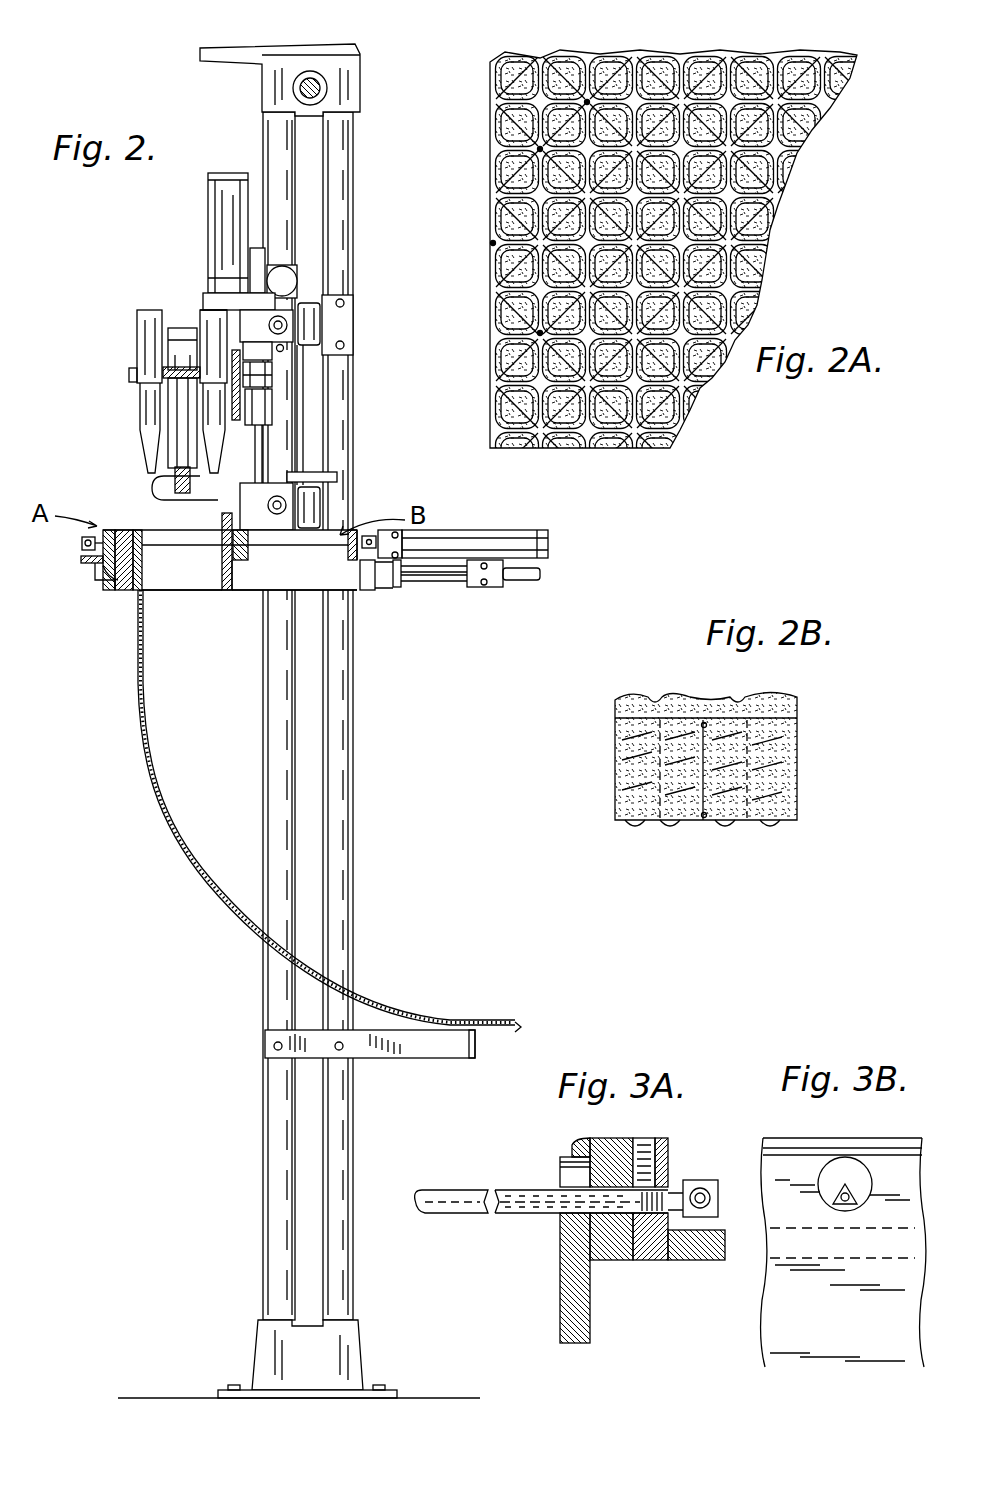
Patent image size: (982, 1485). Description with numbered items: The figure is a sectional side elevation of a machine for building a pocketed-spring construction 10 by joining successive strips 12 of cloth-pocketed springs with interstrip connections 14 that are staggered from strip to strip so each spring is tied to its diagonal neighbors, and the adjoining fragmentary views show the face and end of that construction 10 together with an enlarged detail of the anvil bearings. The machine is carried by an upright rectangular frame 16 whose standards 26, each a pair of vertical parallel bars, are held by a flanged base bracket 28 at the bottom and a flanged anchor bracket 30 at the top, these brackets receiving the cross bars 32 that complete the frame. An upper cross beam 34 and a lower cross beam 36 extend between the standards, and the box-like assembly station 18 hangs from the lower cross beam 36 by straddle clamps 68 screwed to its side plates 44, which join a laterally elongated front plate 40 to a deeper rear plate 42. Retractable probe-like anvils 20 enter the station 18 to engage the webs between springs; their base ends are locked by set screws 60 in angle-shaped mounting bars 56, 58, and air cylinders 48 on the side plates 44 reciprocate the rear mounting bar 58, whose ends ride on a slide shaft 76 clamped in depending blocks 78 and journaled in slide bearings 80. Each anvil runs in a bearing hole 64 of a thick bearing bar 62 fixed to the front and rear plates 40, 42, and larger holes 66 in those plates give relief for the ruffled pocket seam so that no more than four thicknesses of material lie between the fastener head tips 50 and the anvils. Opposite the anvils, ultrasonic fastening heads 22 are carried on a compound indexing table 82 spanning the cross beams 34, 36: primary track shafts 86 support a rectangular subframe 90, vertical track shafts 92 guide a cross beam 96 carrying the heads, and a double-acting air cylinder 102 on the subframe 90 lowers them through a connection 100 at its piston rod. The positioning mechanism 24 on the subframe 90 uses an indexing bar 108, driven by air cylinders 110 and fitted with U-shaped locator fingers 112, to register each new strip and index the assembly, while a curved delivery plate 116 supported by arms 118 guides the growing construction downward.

In FIG. 2A, the pocketed-spring construction 10 is at (717, 387).
In FIG. 2B, the pocketed-spring construction 10 is at (808, 806).
In FIG. 2A, the strips of springs 12 is at (574, 60).
In FIG. 2A, the interstrip connections 14 is at (492, 244).
In FIG. 2B, the interstrip connections 14 is at (704, 722).
In FIG. 2, the upright rectangular frame 16 is at (373, 748).
In FIG. 2, the assembly station 18 is at (187, 607).
In FIG. 2, the anvils 20 is at (160, 552).
In FIG. 3A, the anvils 20 is at (457, 1200).
In FIG. 2, the ultrasonic fastening heads 22 is at (137, 320).
In FIG. 2, the positioning mechanism 24 is at (133, 496).
In FIG. 2, the standards 26 is at (348, 858).
In FIG. 2, the flanged base bracket 28 is at (270, 1350).
In FIG. 2, the flanged anchor bracket 30 is at (345, 58).
In FIG. 2, the cross bars 32 is at (300, 90).
In FIG. 2, the upper cross beam 34 is at (353, 327).
In FIG. 2, the lower cross beam 36 is at (322, 508).
In FIG. 2, the front plate 40 is at (125, 591).
In FIG. 3A, the front plate 40 is at (563, 1280).
In FIG. 3B, the front plate 40 is at (833, 1316).
In FIG. 2, the rear plate 42 is at (230, 592).
In FIG. 2, the side plates 44 is at (335, 608).
In FIG. 2, the air cylinders 48 is at (454, 526).
In FIG. 2, the fastener head tips 50 is at (82, 544).
In FIG. 3A, the fastener head tips 50 is at (705, 1180).
In FIG. 2, the mounting bar 56 is at (98, 574).
In FIG. 3A, the mounting bar 56 is at (662, 1258).
In FIG. 2, the rear mounting bar 58 is at (350, 548).
In FIG. 3A, the set screws 60 is at (648, 1140).
In FIG. 2, the bearing bar 62 is at (112, 582).
In FIG. 3A, the bearing bar 62 is at (610, 1258).
In FIG. 3A, the bearing hole 64 is at (600, 1183).
In FIG. 3B, the bearing hole 64 is at (853, 1204).
In FIG. 3A, the larger holes 66 is at (560, 1170).
In FIG. 3B, the larger holes 66 is at (856, 1167).
In FIG. 2, the straddle clamp 68 is at (314, 474).
In FIG. 2, the slide shaft 76 is at (520, 582).
In FIG. 2, the depending blocks 78 is at (368, 583).
In FIG. 2, the slide bearings 80 is at (460, 588).
In FIG. 2, the compound indexing table 82 is at (263, 442).
In FIG. 2, the primary track shafts 86 is at (293, 284).
In FIG. 2, the rectangular subframe 90 is at (238, 436).
In FIG. 2, the vertical track shafts 92 is at (259, 458).
In FIG. 2, the cross beam 96 is at (272, 381).
In FIG. 2, the ball knob 100 is at (294, 278).
In FIG. 2, the double-acting air cylinder 102 is at (220, 226).
In FIG. 2, the spring strip indexing bar 108 is at (183, 496).
In FIG. 2, the double-acting air cylinders 110 is at (180, 328).
In FIG. 2, the U-shaped locator fingers 112 is at (160, 498).
In FIG. 2, the delivery plate 116 is at (151, 778).
In FIG. 2, the arms 118 is at (388, 1058).